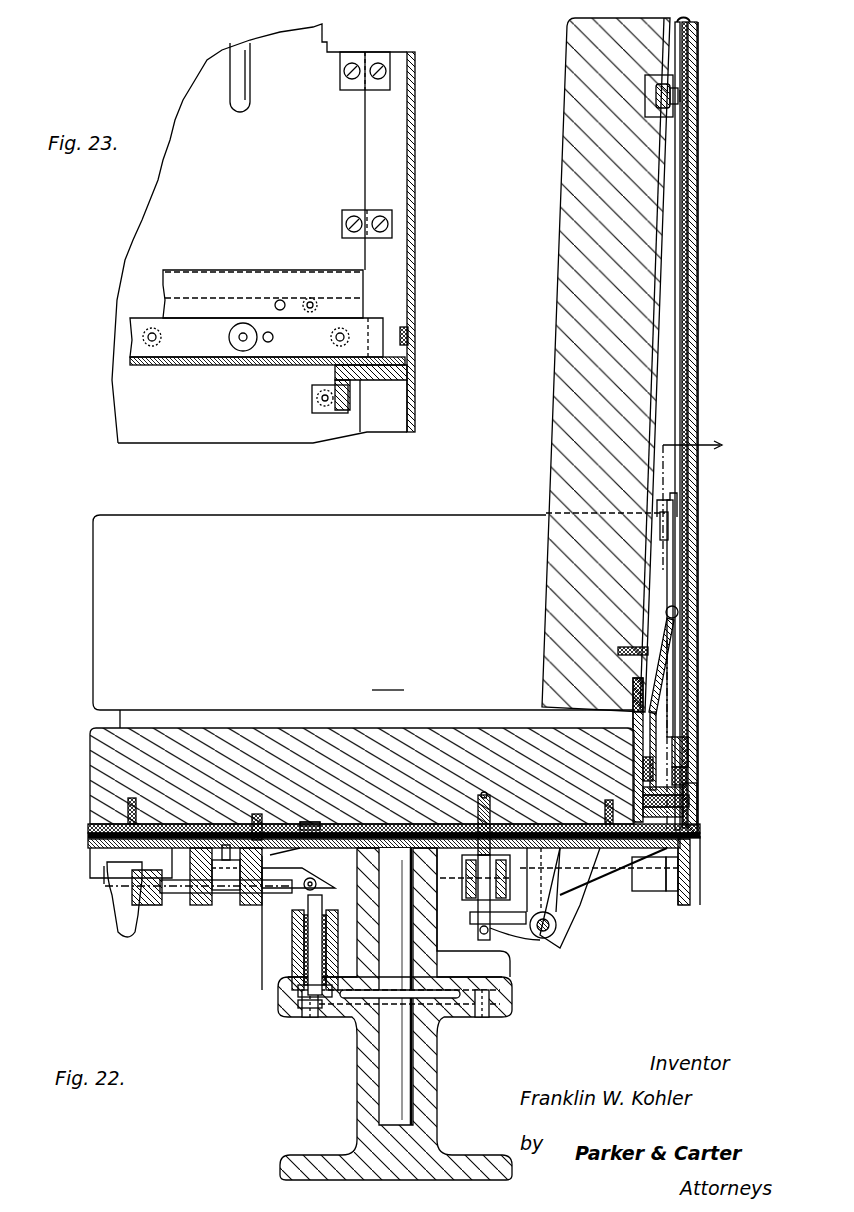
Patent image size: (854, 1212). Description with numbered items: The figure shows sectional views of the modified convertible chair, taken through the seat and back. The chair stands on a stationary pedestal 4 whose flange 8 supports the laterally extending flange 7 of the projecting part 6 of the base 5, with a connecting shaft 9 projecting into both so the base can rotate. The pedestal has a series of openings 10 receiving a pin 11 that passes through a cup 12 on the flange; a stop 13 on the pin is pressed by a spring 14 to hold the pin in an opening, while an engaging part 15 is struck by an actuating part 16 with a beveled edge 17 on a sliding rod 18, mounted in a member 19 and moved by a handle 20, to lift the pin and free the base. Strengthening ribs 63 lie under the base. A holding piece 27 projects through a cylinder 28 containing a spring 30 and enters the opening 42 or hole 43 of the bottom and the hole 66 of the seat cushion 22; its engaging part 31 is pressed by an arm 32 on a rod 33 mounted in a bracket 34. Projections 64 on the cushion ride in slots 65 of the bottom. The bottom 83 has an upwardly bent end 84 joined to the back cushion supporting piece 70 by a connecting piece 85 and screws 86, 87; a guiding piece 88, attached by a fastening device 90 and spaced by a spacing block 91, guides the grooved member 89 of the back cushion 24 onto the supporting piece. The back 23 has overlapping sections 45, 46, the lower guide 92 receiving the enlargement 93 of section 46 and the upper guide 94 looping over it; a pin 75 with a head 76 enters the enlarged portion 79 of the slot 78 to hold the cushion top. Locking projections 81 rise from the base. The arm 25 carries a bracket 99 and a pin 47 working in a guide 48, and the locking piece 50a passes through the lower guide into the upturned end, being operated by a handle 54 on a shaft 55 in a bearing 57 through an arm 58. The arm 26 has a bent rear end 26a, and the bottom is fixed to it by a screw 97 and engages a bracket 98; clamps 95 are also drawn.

In FIG. 22, the pedestal 4 is at (430, 1076).
In FIG. 22, the base 5 is at (90, 845).
In FIG. 22, the projecting part 6 is at (435, 950).
In FIG. 22, the laterally extending flange 7 is at (510, 990).
In FIG. 22, the flange of the pedestal 8 is at (500, 1010).
In FIG. 22, the connecting piece or shaft 9 is at (404, 1088).
In FIG. 22, the openings 10 is at (312, 1018).
In FIG. 22, the pin 11 is at (298, 1008).
In FIG. 22, the cup 12 is at (300, 972).
In FIG. 22, the stop 13 is at (298, 992).
In FIG. 22, the spring 14 is at (292, 960).
In FIG. 22, the engaging part 15 is at (314, 880).
In FIG. 22, the actuating part 16 is at (262, 900).
In FIG. 22, the beveled edge 17 is at (287, 859).
In FIG. 22, the sliding rod 18 is at (178, 896).
In FIG. 22, the member 19 is at (198, 908).
In FIG. 22, the handle 20 is at (148, 908).
In FIG. 22, the seat cushion 22 is at (100, 746).
In FIG. 22, the back 23 is at (697, 278).
In FIG. 22, the back cushion 24 is at (568, 212).
In FIG. 22, the arm 25 is at (100, 577).
In FIG. 23, the arm 26 is at (415, 142).
In FIG. 23, the rear end of arm 26a is at (395, 52).
In FIG. 22, the holding piece 27 is at (470, 795).
In FIG. 22, the cylinder 28 is at (478, 926).
In FIG. 22, the spring 30 is at (475, 882).
In FIG. 22, the engaging part 31 is at (492, 930).
In FIG. 22, the arm 32 is at (520, 933).
In FIG. 22, the rod 33 is at (550, 933).
In FIG. 22, the bracket 34 is at (558, 910).
In FIG. 22, the opening 42 is at (470, 800).
In FIG. 22, the hole 43 is at (308, 826).
In FIG. 23, the back section 45 is at (200, 82).
In FIG. 22, the back section 45 is at (699, 188).
In FIG. 22, the back section 46 is at (690, 222).
In FIG. 22, the pin 47 is at (680, 520).
In FIG. 22, the guide 48 is at (676, 555).
In FIG. 22, the locking piece 50a is at (692, 858).
In FIG. 22, the handle 54 is at (120, 932).
In FIG. 22, the shaft 55 is at (630, 890).
In FIG. 22, the bearing 57 is at (652, 892).
In FIG. 22, the arm 58 is at (676, 892).
In FIG. 22, the strengthening ribs 63 is at (275, 893).
In FIG. 22, the projections 64 is at (232, 893).
In FIG. 22, the slots 65 is at (254, 810).
In FIG. 22, the hole 66 is at (482, 795).
In FIG. 22, the back cushion supporting piece 70 is at (632, 690).
In FIG. 22, the pin 75 is at (660, 95).
In FIG. 22, the head 76 is at (670, 100).
In FIG. 22, the slot 78 is at (668, 78).
In FIG. 22, the enlarged portion 79 is at (676, 108).
In FIG. 22, the locking projections 81 is at (90, 836).
In FIG. 23, the bottom 83 is at (208, 366).
In FIG. 22, the bottom 83 is at (90, 828).
In FIG. 23, the upwardly bent end 84 is at (372, 320).
In FIG. 22, the upwardly bent end 84 is at (690, 822).
In FIG. 23, the connecting piece 85 is at (238, 326).
In FIG. 22, the connecting piece 85 is at (684, 790).
In FIG. 22, the screw 86 is at (690, 802).
In FIG. 22, the screw 87 is at (640, 800).
In FIG. 22, the guiding piece 88 is at (668, 650).
In FIG. 22, the grooved member 89 is at (625, 650).
In FIG. 22, the fastening device 90 is at (652, 775).
In FIG. 22, the spacing block 91 is at (646, 762).
In FIG. 23, the lower guide 92 is at (257, 280).
In FIG. 22, the lower guide 92 is at (686, 772).
In FIG. 22, the enlargement 93 is at (688, 760).
In FIG. 22, the upper guide 94 is at (690, 22).
In FIG. 23, the clamp 95 is at (385, 82).
In FIG. 23, the screw 97 is at (415, 335).
In FIG. 23, the bracket 98 is at (380, 382).
In FIG. 22, the bracket 98 is at (95, 862).
In FIG. 22, the bracket 99 is at (668, 525).